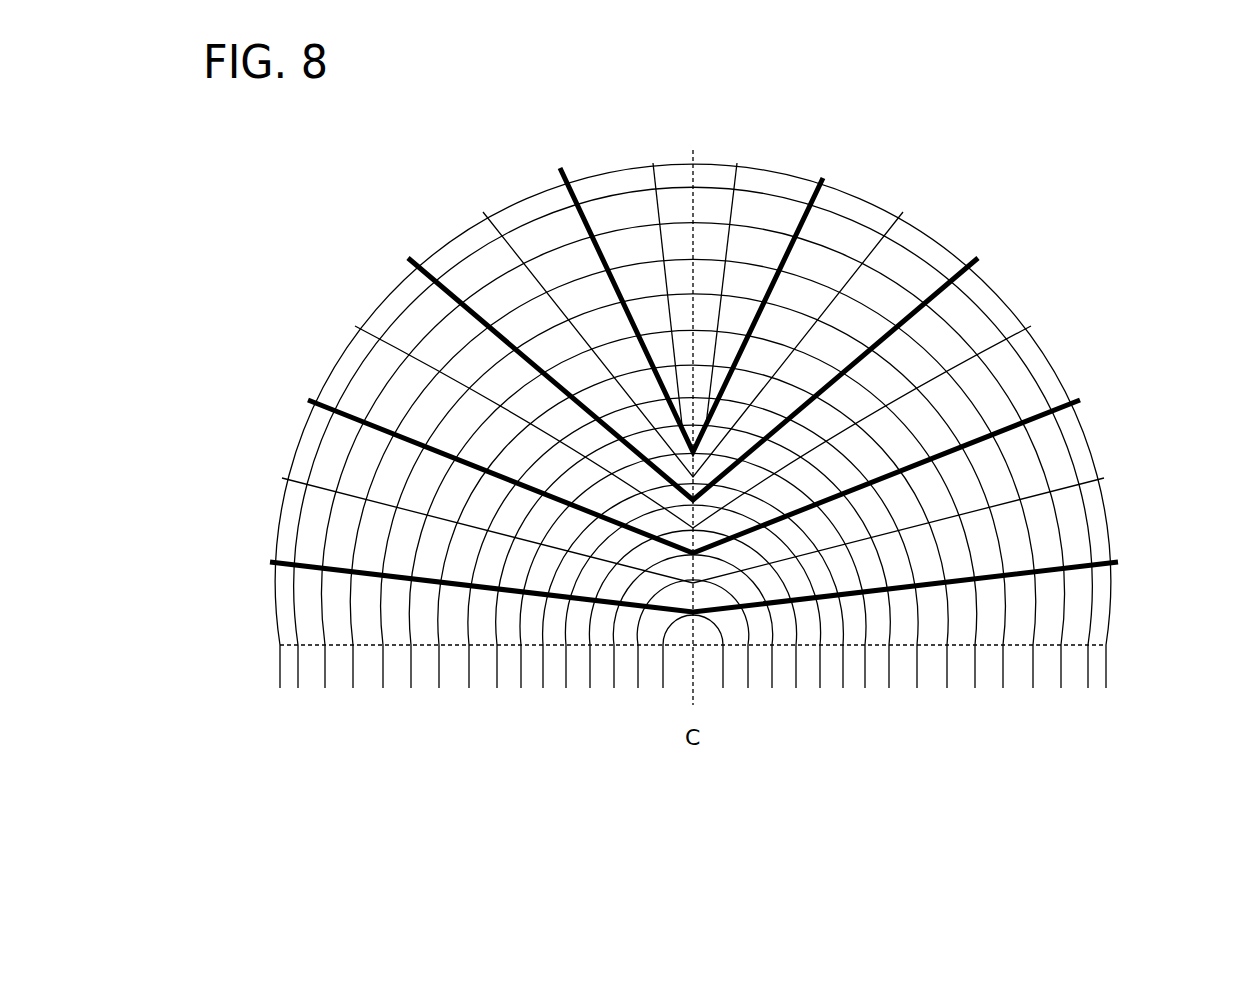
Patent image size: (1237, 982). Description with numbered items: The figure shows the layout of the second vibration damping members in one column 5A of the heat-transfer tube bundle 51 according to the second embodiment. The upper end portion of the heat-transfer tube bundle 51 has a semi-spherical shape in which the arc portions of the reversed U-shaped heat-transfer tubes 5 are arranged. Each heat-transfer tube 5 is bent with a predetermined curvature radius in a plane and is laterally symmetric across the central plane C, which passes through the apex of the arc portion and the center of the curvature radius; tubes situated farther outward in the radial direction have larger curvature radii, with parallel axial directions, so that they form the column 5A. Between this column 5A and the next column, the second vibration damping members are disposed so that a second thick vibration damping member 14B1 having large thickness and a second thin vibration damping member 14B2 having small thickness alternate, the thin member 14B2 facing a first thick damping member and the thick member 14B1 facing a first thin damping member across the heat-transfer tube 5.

The heat-transfer tube 5 is at (1050, 560).
The column 5A is at (997, 170).
The heat-transfer tube bundle 51 is at (244, 650).
The second thick vibration damping member 14B1 is at (562, 165).
The second thin vibration damping member 14B2 is at (483, 208).